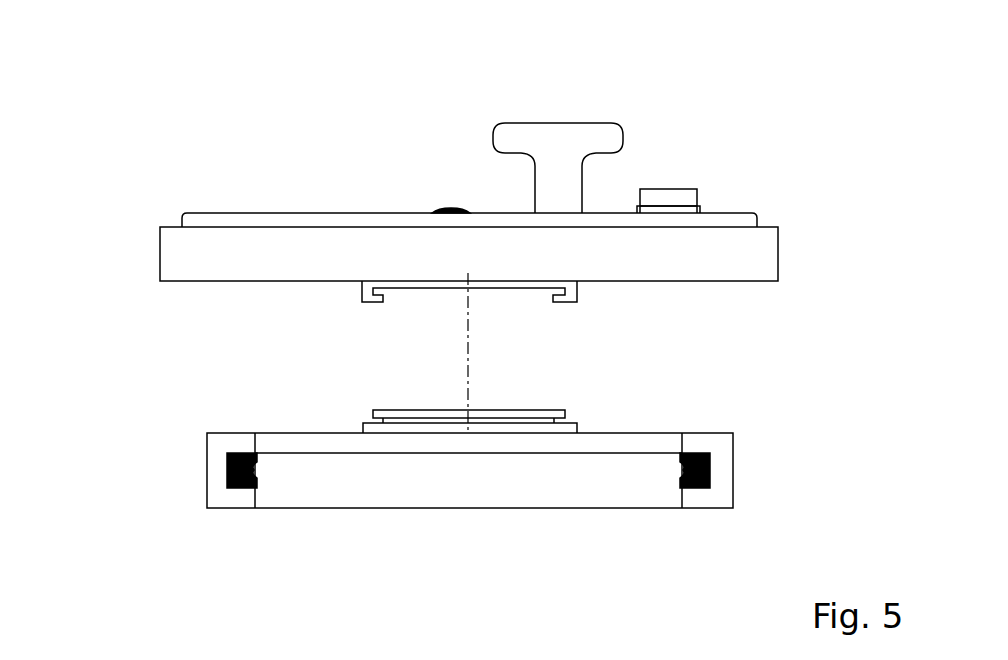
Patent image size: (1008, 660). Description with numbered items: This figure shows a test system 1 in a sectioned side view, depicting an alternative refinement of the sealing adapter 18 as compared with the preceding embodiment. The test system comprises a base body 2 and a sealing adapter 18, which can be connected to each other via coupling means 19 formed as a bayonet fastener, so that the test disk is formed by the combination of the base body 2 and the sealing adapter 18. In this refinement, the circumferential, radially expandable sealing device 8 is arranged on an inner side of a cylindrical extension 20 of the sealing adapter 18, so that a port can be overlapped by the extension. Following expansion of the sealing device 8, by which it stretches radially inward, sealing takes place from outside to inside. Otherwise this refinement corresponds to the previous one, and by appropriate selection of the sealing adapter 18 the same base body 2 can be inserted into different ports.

The sample holder assembly 1 is at (163, 155).
The base body 2 is at (157, 244).
The sealing device 8 is at (227, 457).
The sealing adapter 18 is at (282, 512).
The coupling means 19 is at (575, 308).
The cylindrical extension 20 is at (215, 473).